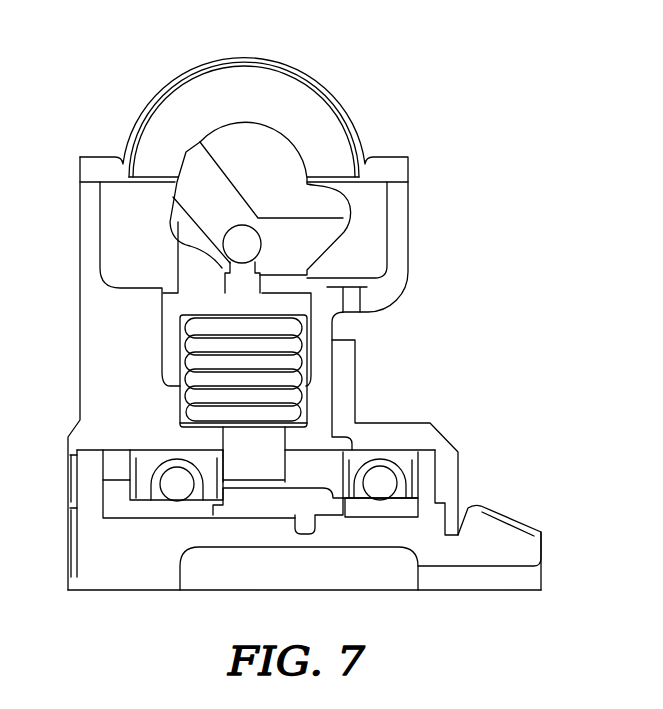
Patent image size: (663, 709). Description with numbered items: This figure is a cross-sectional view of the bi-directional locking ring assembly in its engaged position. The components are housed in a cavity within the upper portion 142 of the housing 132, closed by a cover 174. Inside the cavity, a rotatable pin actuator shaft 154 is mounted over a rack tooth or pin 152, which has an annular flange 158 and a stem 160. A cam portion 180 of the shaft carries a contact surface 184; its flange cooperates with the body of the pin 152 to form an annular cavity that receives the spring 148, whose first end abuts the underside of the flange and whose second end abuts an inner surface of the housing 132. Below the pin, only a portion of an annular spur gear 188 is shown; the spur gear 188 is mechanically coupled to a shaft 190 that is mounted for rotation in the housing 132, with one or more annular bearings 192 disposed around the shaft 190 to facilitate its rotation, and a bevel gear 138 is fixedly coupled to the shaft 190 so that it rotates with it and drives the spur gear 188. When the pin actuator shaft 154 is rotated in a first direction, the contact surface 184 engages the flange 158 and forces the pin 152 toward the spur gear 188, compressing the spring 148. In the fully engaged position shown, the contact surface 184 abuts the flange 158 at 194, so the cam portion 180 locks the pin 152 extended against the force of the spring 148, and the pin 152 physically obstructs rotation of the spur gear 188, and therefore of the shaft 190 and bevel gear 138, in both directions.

The housing 132 is at (414, 433).
The bevel gear 138 is at (530, 552).
The upper portion 142 is at (398, 222).
The second spring 148 is at (196, 408).
The pin 152 is at (157, 322).
The pin actuator shaft 154 is at (308, 197).
The annular flange 158 is at (173, 317).
The stem 160 is at (226, 245).
The cover 174 is at (160, 85).
The cam portion 180 is at (235, 132).
The contact surface 184 is at (400, 281).
The spur gear 188 is at (252, 507).
The shaft 190 is at (125, 577).
The annular bearings 192 is at (177, 495).
The abutment of contact surface and flange 194 is at (263, 288).